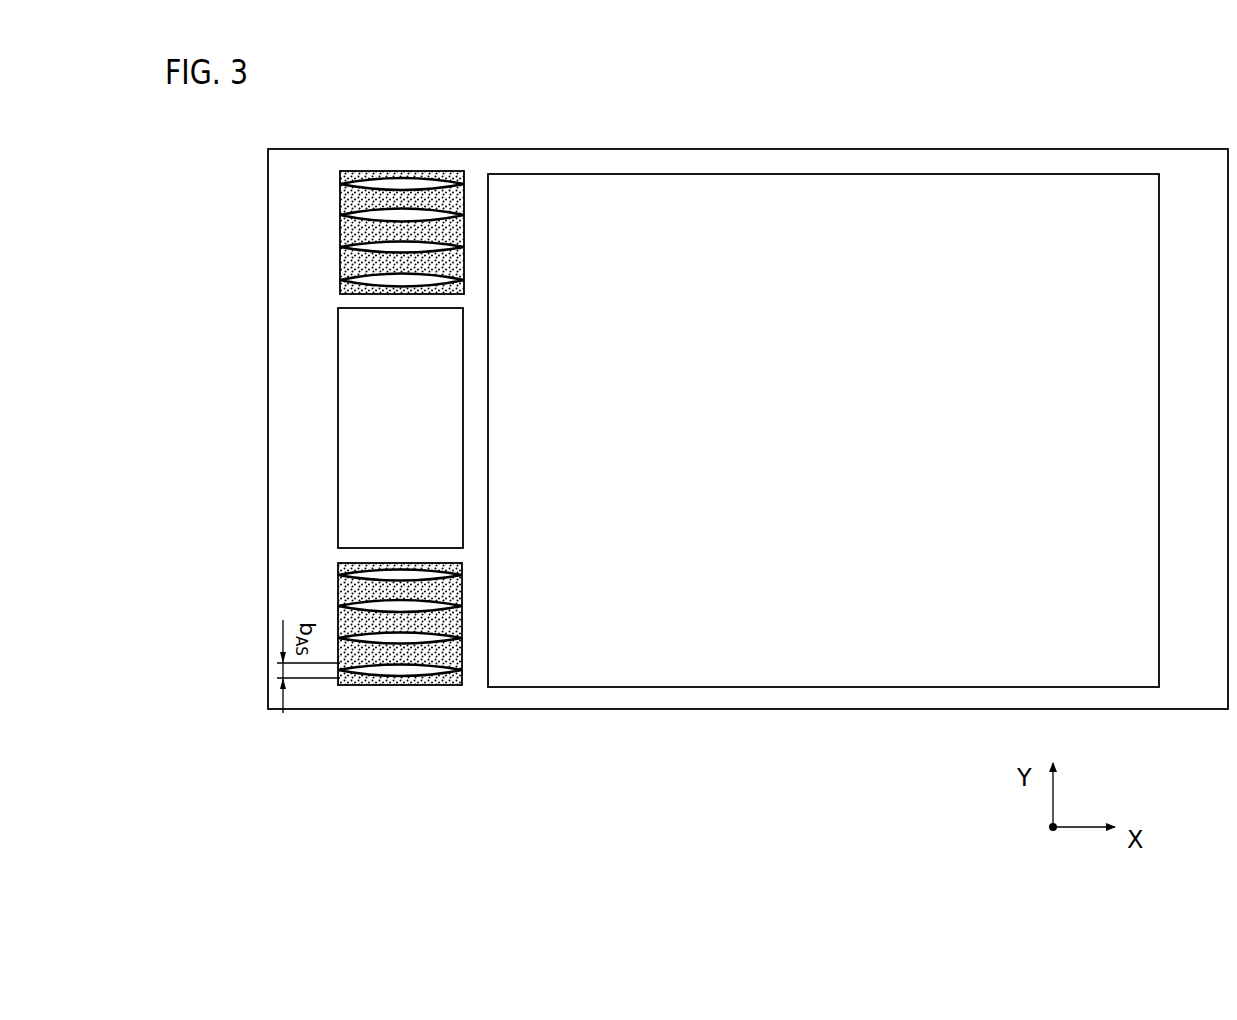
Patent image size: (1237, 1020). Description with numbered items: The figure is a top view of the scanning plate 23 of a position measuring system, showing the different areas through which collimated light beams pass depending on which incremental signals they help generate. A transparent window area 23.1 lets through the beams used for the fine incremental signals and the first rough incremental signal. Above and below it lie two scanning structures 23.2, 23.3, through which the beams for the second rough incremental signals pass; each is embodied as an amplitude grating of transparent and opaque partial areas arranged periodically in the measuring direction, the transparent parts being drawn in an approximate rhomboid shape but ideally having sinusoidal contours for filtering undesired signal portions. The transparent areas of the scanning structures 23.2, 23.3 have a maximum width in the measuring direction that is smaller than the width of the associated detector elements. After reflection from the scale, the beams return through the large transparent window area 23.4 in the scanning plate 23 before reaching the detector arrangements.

The scanning plate 23 is at (260, 318).
The transparent window area 23.1 is at (357, 425).
The scanning structure 23.2 is at (348, 216).
The scanning structure 23.3 is at (343, 580).
The transparent window area 23.4 is at (1104, 187).